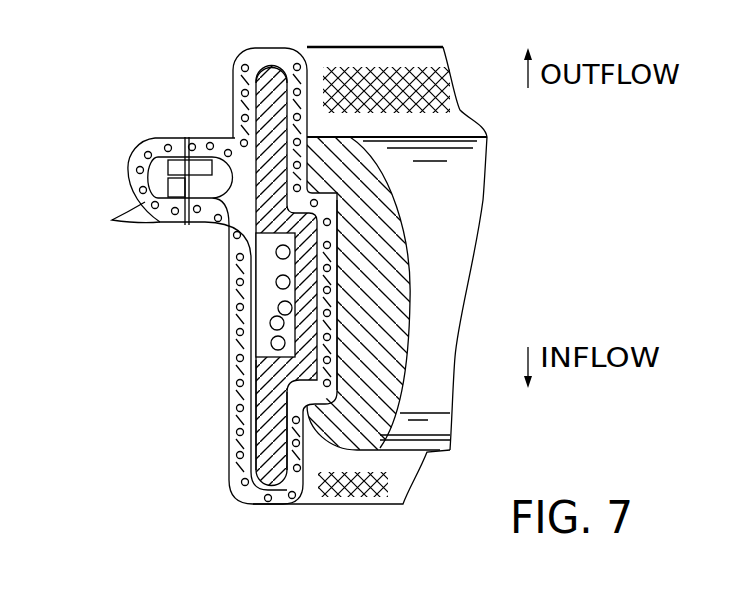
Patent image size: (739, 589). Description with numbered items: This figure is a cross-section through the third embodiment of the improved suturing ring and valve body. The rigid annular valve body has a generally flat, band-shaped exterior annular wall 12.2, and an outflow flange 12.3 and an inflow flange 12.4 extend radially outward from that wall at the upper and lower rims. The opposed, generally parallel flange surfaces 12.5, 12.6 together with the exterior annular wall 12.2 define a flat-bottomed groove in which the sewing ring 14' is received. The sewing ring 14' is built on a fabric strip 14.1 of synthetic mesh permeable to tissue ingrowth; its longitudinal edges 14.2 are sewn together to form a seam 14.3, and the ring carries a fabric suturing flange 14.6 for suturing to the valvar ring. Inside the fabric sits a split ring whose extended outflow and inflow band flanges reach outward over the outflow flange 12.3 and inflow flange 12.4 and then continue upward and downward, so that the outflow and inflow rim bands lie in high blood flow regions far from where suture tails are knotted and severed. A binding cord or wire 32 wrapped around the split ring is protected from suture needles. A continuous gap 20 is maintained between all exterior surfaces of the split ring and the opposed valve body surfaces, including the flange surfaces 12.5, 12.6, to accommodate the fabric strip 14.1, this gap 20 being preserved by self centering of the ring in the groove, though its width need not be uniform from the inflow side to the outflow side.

The suturing flange 14.6 is at (200, 127).
The outflow flange 12.3 is at (338, 167).
The flange surface 12.5 is at (320, 186).
The gap 20 is at (344, 228).
The fabric strip 14.1 is at (317, 295).
The exterior annular wall 12.2 is at (340, 360).
The flange surface 12.6 is at (450, 416).
The inflow flange 12.4 is at (333, 432).
The longitudinal edges 14.2 is at (113, 220).
The seam 14.3 is at (188, 226).
The sewing ring 14' is at (220, 276).
The cord or wire 32 is at (280, 335).